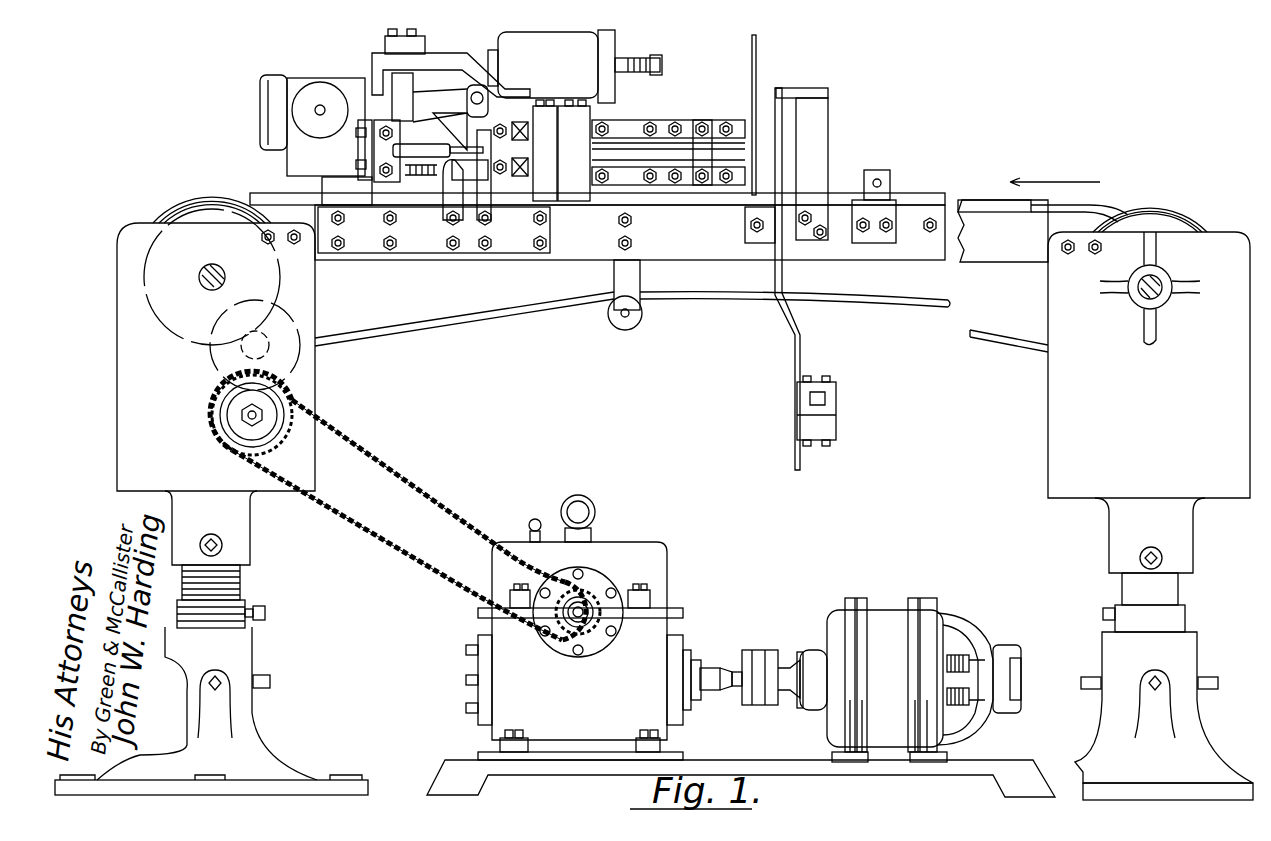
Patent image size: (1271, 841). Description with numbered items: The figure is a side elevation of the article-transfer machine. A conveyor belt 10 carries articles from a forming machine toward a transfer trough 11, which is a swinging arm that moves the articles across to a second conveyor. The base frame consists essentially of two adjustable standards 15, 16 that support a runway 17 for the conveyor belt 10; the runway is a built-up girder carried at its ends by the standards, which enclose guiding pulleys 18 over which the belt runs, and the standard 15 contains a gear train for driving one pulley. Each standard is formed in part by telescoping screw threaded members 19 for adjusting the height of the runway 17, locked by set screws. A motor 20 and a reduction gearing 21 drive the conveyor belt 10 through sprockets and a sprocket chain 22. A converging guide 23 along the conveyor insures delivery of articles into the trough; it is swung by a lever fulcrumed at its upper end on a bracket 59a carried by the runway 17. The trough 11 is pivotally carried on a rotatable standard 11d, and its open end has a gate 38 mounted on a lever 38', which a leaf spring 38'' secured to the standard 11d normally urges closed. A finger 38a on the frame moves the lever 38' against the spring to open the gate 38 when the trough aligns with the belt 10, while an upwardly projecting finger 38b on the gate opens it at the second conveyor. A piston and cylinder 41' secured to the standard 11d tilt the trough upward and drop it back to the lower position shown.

The conveyor belt 10 is at (1102, 205).
The transfer trough 11 is at (640, 122).
The standard 11d is at (400, 182).
The adjustable standard 15 is at (312, 384).
The adjustable standard 16 is at (1050, 393).
The runway 17 is at (987, 255).
The guiding pulleys 18 is at (186, 218).
The telescoping screw threaded members 19 is at (242, 618).
The motor 20 is at (890, 608).
The reduction gearing 21 is at (662, 634).
The sprocket chain 22 is at (410, 497).
The converging guide 23 is at (908, 190).
The gate 38 is at (796, 260).
The lever 38' is at (707, 134).
The leaf spring 38'' is at (407, 113).
The finger 38a is at (496, 250).
The upwardly projecting finger 38b is at (752, 62).
The piston and cylinder 41' is at (312, 109).
The bracket 59a is at (828, 150).